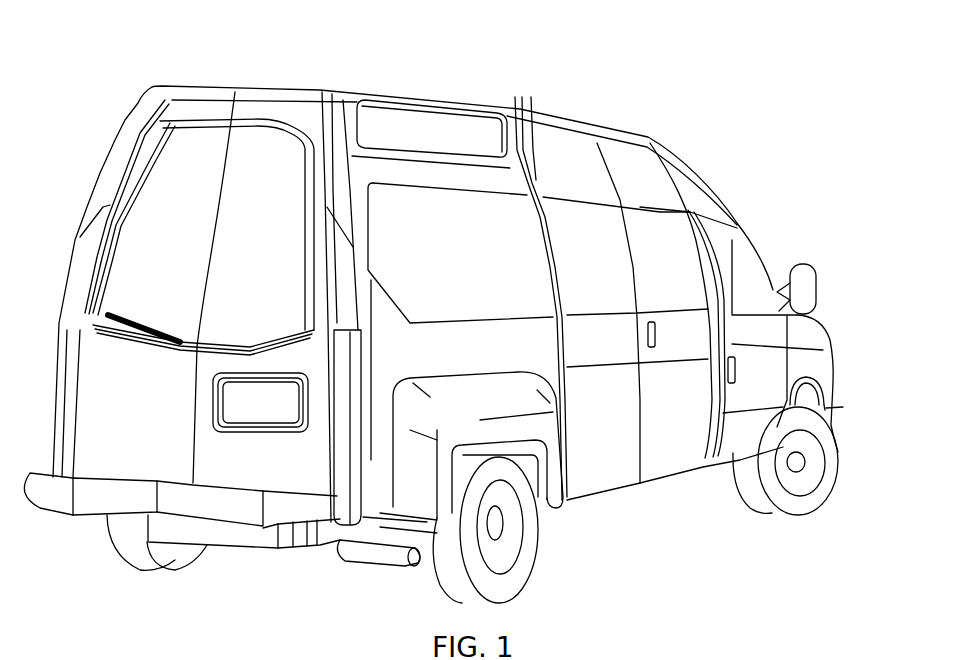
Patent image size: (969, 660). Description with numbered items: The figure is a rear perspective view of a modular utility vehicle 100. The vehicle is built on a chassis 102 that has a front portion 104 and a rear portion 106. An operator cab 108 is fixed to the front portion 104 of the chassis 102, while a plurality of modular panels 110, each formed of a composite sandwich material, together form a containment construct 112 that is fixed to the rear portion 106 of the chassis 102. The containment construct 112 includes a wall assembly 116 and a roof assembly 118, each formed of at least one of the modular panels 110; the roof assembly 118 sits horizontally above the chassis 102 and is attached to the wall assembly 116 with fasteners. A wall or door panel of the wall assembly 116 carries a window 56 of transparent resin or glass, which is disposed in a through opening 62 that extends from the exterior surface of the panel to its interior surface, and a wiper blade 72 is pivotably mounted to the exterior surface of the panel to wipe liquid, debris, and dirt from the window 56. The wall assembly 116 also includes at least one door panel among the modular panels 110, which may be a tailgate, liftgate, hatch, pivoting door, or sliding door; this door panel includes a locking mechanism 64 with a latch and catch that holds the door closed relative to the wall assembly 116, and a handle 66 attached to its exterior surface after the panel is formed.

The modular utility vehicle 100 is at (718, 114).
The chassis 102 is at (130, 488).
The front portion 104 is at (835, 405).
The rear portion 106 is at (320, 535).
The operator cab 108 is at (773, 362).
The modular panels 110 is at (206, 444).
The containment construct 112 is at (520, 117).
The wall assembly 116 is at (510, 363).
The roof assembly 118 is at (408, 100).
The window 56 is at (158, 258).
The through opening 62 is at (133, 133).
The locking mechanism 64 is at (230, 413).
The handle 66 is at (658, 333).
The wiper blade 72 is at (59, 323).